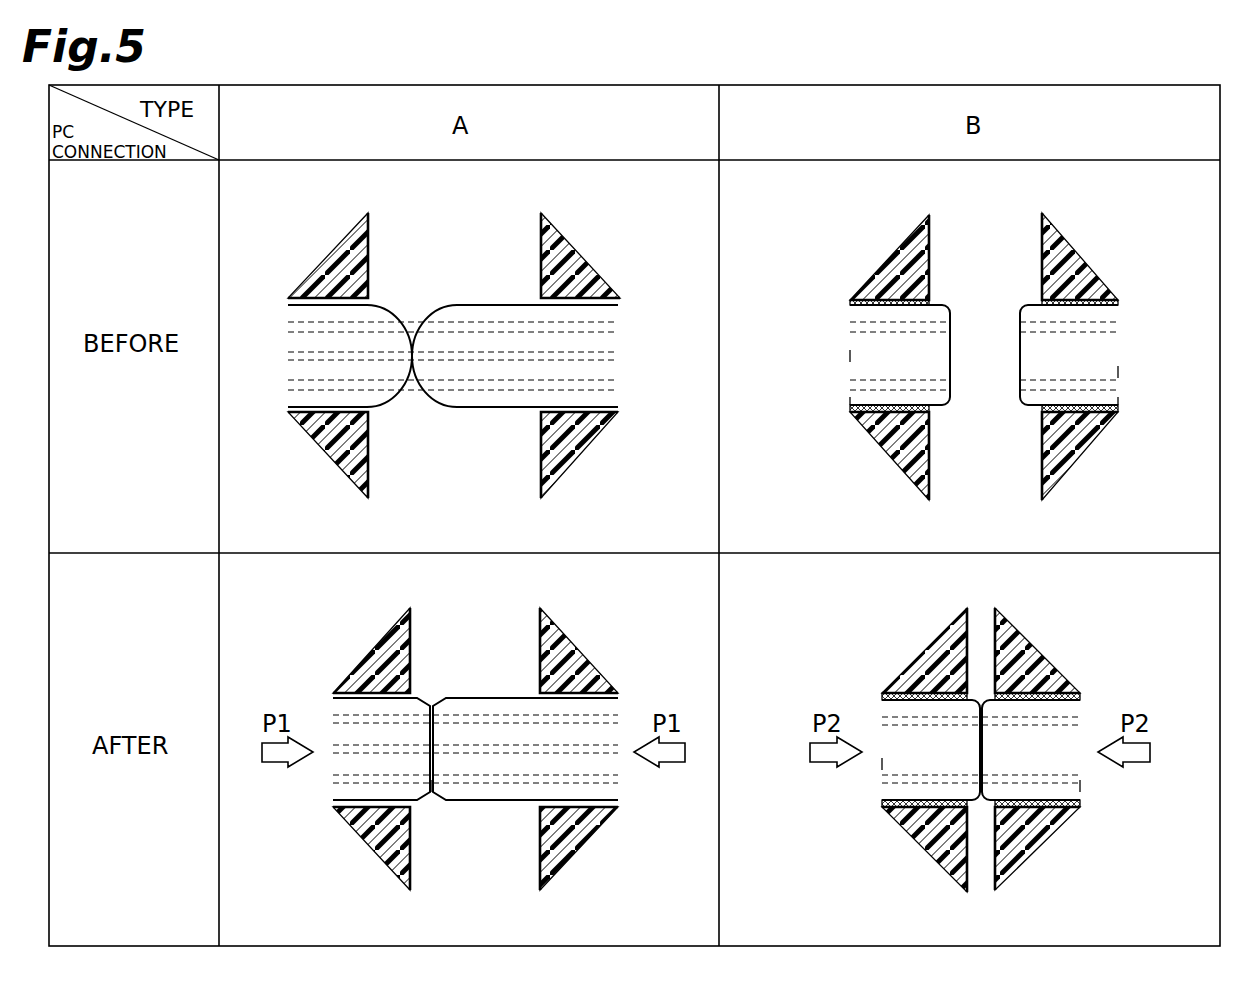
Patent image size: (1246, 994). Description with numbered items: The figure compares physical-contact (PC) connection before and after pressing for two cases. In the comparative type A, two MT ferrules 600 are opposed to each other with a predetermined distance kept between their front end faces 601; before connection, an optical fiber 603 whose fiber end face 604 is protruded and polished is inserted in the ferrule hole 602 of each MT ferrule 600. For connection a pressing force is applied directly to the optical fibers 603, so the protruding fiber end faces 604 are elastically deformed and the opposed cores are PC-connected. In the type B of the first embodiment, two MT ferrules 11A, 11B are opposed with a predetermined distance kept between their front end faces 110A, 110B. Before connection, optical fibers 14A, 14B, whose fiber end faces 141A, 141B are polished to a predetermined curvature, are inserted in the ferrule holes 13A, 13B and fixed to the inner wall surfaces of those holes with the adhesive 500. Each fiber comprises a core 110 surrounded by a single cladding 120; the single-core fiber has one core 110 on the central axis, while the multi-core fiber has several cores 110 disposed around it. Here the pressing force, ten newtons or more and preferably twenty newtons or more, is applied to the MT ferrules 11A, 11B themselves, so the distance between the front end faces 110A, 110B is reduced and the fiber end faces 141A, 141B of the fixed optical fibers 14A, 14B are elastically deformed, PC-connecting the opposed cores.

The MT ferrule 600 is at (332, 262).
The front end face 601 is at (541, 265).
The ferrule hole 602 is at (529, 296).
The optical fiber 603 is at (326, 375).
The fiber end face 604 is at (412, 362).
The MT ferrule 11A is at (1065, 258).
The MT ferrule 11B is at (893, 274).
The front end face 110A is at (1042, 243).
The front end face 110B is at (930, 241).
The ferrule hole 13A is at (1035, 296).
The ferrule hole 13B is at (940, 296).
The optical fiber 14A is at (1128, 373).
The optical fiber 14B is at (842, 357).
The core 110 is at (870, 384).
The cladding 120 is at (850, 397).
The fiber end face 141A is at (1020, 372).
The fiber end face 141B is at (950, 364).
The adhesive 500 is at (850, 302).